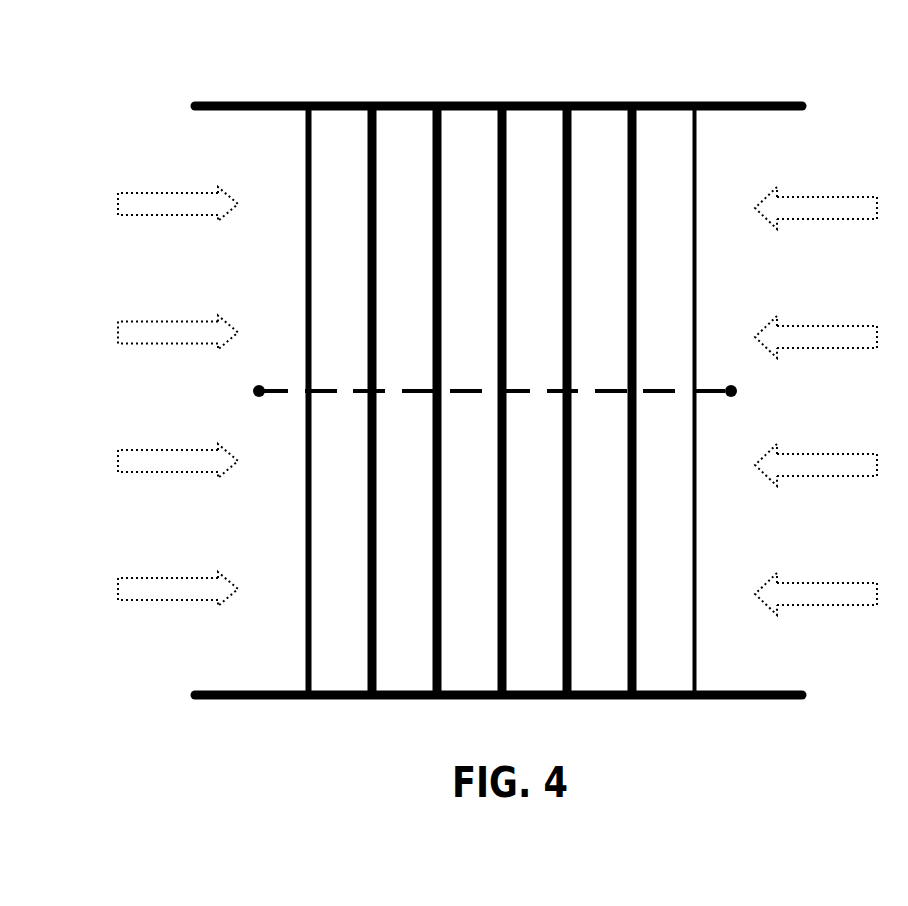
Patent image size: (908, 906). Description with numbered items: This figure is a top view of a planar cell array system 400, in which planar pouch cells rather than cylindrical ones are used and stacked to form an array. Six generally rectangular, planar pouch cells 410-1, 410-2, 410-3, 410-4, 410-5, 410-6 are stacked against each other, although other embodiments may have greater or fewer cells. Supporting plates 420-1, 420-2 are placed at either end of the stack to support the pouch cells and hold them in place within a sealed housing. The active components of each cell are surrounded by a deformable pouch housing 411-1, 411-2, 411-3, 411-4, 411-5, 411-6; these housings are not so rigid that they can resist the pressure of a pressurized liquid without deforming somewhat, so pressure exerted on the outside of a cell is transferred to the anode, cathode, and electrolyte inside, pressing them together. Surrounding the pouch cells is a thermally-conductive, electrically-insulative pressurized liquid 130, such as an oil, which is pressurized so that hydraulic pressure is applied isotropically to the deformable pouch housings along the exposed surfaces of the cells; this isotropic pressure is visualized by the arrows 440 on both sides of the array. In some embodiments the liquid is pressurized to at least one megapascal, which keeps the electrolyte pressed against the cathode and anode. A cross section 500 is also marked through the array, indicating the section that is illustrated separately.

The planar cell array system 400 is at (62, 68).
The supporting plate 420-1 is at (254, 101).
The supporting plate 420-2 is at (282, 690).
The pouch cell 410-1 is at (337, 131).
The pouch cell 410-2 is at (403, 131).
The pouch cell 410-3 is at (469, 131).
The pouch cell 410-4 is at (536, 131).
The pouch cell 410-5 is at (603, 131).
The pouch cell 410-6 is at (669, 131).
The deformable pouch housing 411-1 is at (305, 294).
The deformable pouch housing 411-2 is at (432, 293).
The deformable pouch housing 411-3 is at (497, 293).
The deformable pouch housing 411-4 is at (562, 293).
The deformable pouch housing 411-5 is at (627, 293).
The deformable pouch housing 411-6 is at (692, 293).
The cross section 500 is at (260, 390).
The thermally-conductive electrically-insulative pressurized liquid 130 is at (262, 208).
The arrows 440 is at (170, 193).